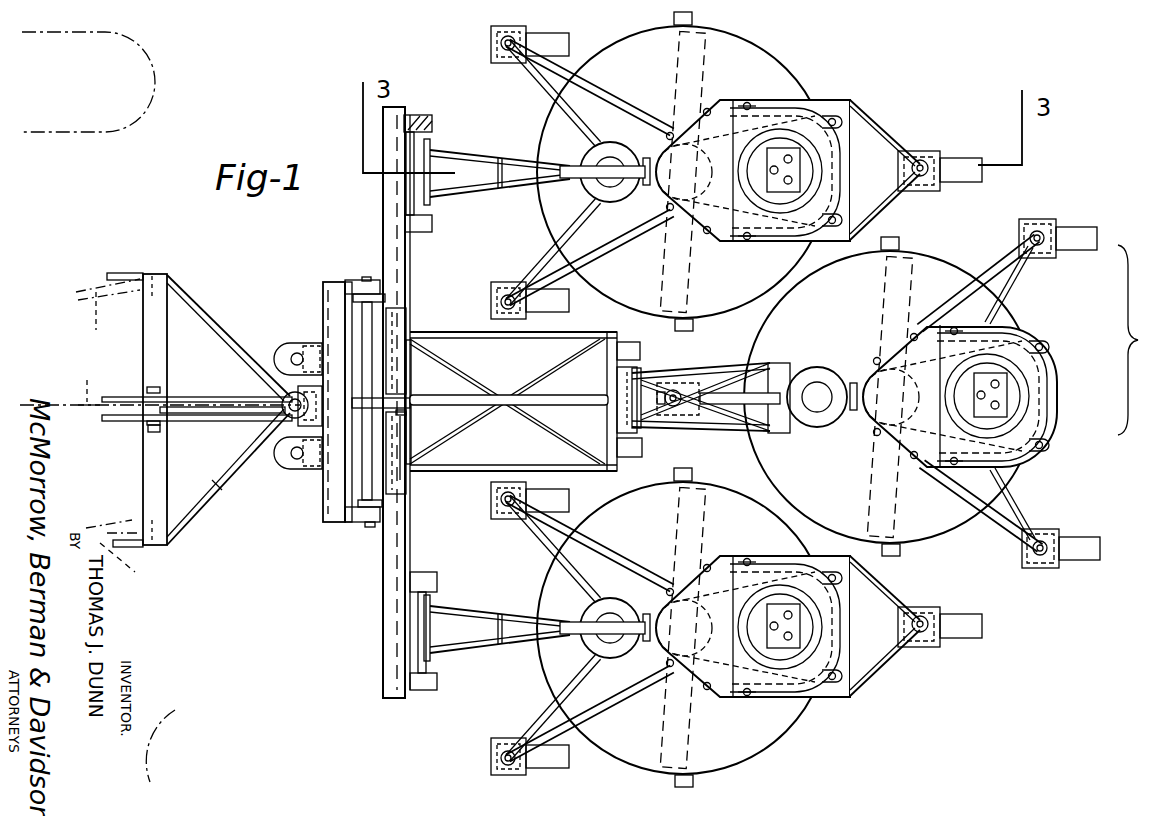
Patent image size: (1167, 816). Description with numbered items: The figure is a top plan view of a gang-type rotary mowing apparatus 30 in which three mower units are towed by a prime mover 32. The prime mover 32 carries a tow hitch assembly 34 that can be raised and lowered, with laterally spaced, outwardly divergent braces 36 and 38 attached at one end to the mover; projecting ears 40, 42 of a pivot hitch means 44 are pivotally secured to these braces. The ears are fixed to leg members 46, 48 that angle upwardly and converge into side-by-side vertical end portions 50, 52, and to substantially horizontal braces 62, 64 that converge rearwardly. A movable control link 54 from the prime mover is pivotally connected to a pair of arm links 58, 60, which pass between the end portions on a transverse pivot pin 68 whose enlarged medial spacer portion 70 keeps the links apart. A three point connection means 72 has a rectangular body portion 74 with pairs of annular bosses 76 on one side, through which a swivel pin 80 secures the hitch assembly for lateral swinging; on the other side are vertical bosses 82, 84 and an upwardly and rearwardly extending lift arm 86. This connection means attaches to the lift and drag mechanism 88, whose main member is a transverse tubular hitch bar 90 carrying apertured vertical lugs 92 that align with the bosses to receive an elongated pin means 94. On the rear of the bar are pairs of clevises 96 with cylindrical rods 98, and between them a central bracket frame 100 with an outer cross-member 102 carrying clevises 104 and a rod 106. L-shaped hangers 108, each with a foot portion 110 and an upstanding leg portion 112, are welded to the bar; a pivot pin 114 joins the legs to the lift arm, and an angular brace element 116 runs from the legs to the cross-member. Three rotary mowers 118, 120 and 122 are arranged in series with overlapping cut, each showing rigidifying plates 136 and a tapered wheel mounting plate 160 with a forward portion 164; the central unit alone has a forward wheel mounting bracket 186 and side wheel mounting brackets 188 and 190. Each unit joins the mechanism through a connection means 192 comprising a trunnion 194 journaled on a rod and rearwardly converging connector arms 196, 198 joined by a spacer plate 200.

The rotary mowing apparatus 30 is at (1141, 340).
The prime mover 32 is at (166, 700).
The tow hitch assembly 34 is at (86, 424).
The brace 36 is at (119, 555).
The brace 38 is at (87, 317).
The projecting ear 40 is at (120, 272).
The projecting ear 42 is at (140, 550).
The pivot hitch means 44 is at (224, 468).
The leg member 46 is at (167, 342).
The leg member 48 is at (160, 490).
The end portion 50 is at (162, 388).
The end portion 52 is at (162, 432).
The control link 54 is at (85, 379).
The arm link 58 is at (252, 412).
The arm link 60 is at (230, 397).
The horizontal brace 62 is at (226, 492).
The horizontal brace 64 is at (195, 302).
The transverse pivot pin 68 is at (150, 438).
The medial spacer portion 70 is at (190, 413).
The three point connection means 72 is at (346, 536).
The body portion 74 is at (330, 510).
The annular boss 76 is at (304, 468).
The swivel pin 80 is at (284, 364).
The vertical boss 82 is at (358, 530).
The vertical boss 84 is at (352, 280).
The lift arm 86 is at (368, 390).
The lift and drag mechanism 88 is at (382, 652).
The hitch bar 90 is at (384, 196).
The vertical lug 92 is at (382, 503).
The pin means 94 is at (412, 462).
The clevis 96 is at (432, 122).
The cylindrical rod 98 is at (424, 114).
The central bracket frame 100 is at (484, 338).
The cross-member 102 is at (604, 421).
The clevis 104 is at (642, 447).
The rod 106 is at (640, 347).
The L-shaped hanger 108 is at (408, 310).
The foot portion 110 is at (402, 452).
The leg portion 112 is at (410, 400).
The pivot pin 114 is at (406, 414).
The brace element 116 is at (478, 420).
The rotary mower 118 is at (693, 171).
The rotary mower 120 is at (869, 393).
The rotary mower 122 is at (696, 631).
The rigidifying plate 136 is at (694, 782).
The wheel mounting plate 160 is at (964, 326).
The forward portion 164 is at (852, 440).
The forward wheel mounting bracket 186 is at (778, 432).
The side wheel mounting bracket 188 is at (1010, 288).
The side wheel mounting bracket 190 is at (1012, 504).
The connection means 192 is at (534, 632).
The trunnion 194 is at (440, 200).
The connector arm 196 is at (474, 656).
The connector arm 198 is at (478, 606).
The spacer plate 200 is at (508, 628).